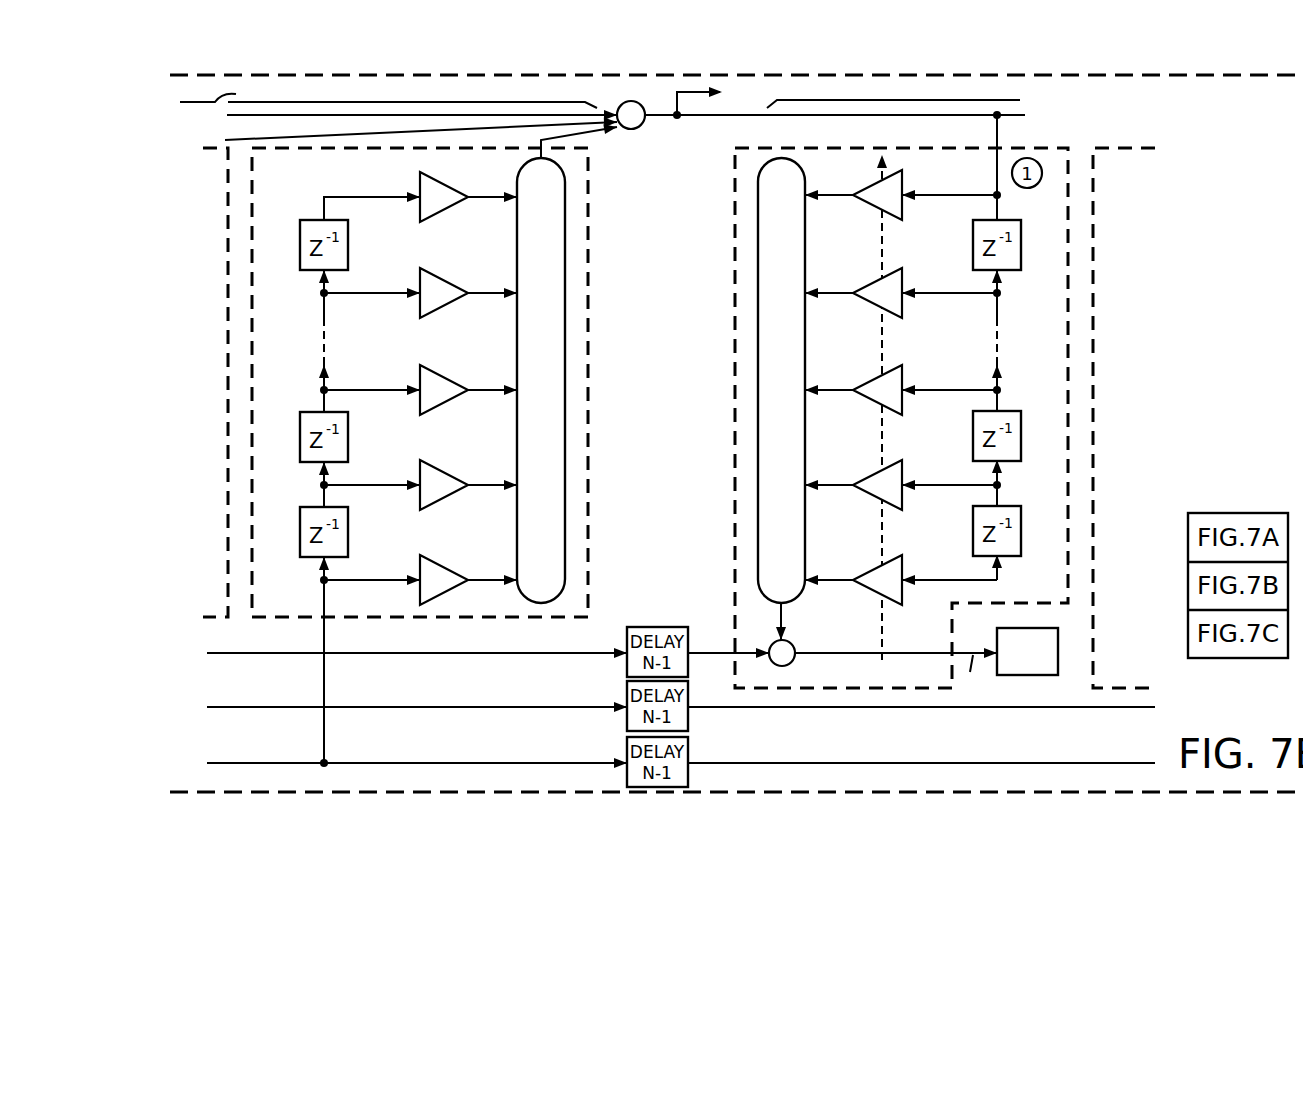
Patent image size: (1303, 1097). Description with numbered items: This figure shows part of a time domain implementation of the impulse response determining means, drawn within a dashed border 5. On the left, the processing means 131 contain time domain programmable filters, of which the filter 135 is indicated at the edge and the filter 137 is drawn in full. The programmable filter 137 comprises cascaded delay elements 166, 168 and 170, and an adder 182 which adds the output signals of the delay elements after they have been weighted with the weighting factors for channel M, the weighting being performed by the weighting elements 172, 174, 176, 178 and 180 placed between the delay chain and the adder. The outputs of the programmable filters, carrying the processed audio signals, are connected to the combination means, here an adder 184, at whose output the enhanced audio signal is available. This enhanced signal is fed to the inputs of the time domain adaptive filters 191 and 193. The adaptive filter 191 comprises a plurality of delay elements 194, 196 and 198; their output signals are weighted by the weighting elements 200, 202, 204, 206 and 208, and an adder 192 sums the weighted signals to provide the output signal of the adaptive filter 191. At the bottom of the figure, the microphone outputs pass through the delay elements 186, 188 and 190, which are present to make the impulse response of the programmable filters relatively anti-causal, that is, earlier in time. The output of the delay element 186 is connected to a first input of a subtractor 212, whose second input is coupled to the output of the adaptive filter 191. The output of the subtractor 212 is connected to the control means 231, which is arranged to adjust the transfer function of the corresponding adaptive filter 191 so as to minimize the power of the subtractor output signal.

The echo canceller unit 5 is at (1262, 76).
The processing means 131 is at (600, 95).
The time domain programmable filter 135 is at (207, 145).
The time domain programmable filter 137 is at (590, 272).
The delay element 166 is at (300, 535).
The delay element 168 is at (300, 440).
The delay element 170 is at (300, 243).
The weight multiplier W_M,1 172 is at (420, 186).
The weight multiplier W_M,2 174 is at (420, 306).
The weight multiplier W_M,N-2 176 is at (420, 380).
The weight multiplier W_M,N-1 178 is at (420, 498).
The weight multiplier W_M,N 180 is at (420, 572).
The adder 182 is at (517, 241).
The adder 184 is at (633, 130).
The delay element 186 is at (661, 627).
The delay element 188 is at (627, 688).
The delay element 190 is at (627, 745).
The time domain adaptive filter 191 is at (731, 229).
The adder 192 is at (805, 229).
The time domain adaptive filter 193 is at (1122, 145).
The delay element 194 is at (1022, 258).
The delay element 196 is at (1022, 438).
The delay element 198 is at (1022, 531).
The weighting element 200 is at (902, 180).
The weighting element 202 is at (902, 308).
The weighting element 204 is at (902, 378).
The weighting element 206 is at (902, 498).
The weighting element 208 is at (902, 572).
The subtractor 212 is at (797, 645).
The control means 231 is at (1030, 677).